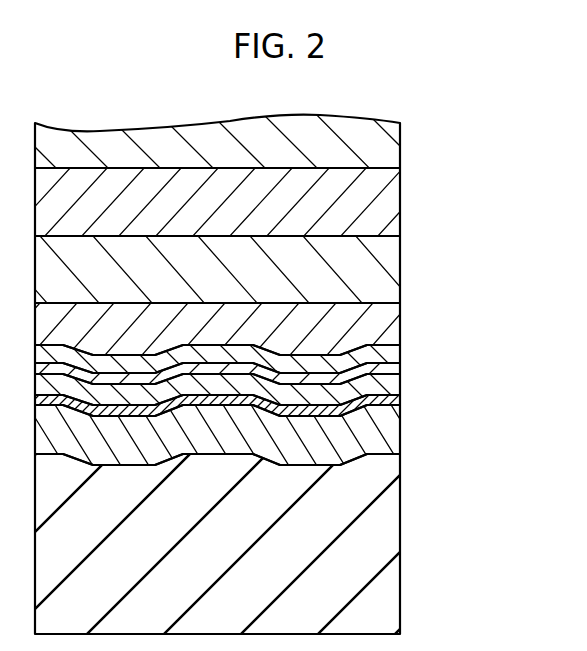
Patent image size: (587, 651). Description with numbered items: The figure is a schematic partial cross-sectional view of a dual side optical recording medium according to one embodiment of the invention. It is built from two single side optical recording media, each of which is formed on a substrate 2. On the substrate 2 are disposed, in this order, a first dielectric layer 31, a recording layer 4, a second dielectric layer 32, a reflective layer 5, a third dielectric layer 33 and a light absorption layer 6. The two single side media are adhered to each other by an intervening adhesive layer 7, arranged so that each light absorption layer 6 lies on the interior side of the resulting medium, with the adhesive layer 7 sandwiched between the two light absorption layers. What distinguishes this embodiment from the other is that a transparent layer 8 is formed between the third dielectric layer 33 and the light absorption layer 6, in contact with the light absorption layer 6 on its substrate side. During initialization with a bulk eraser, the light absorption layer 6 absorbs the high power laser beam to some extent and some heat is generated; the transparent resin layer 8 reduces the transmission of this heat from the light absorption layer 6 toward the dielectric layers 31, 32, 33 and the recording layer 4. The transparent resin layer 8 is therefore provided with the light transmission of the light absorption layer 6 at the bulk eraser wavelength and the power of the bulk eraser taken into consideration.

The substrate 2 is at (395, 520).
The first dielectric layer 31 is at (393, 437).
The recording layer 4 is at (393, 398).
The second dielectric layer 32 is at (393, 388).
The reflective layer 5 is at (393, 367).
The third dielectric layer 33 is at (393, 357).
The transparent layer 8 is at (395, 320).
The light absorption layer 6 is at (393, 155).
The adhesive layer 7 is at (393, 205).